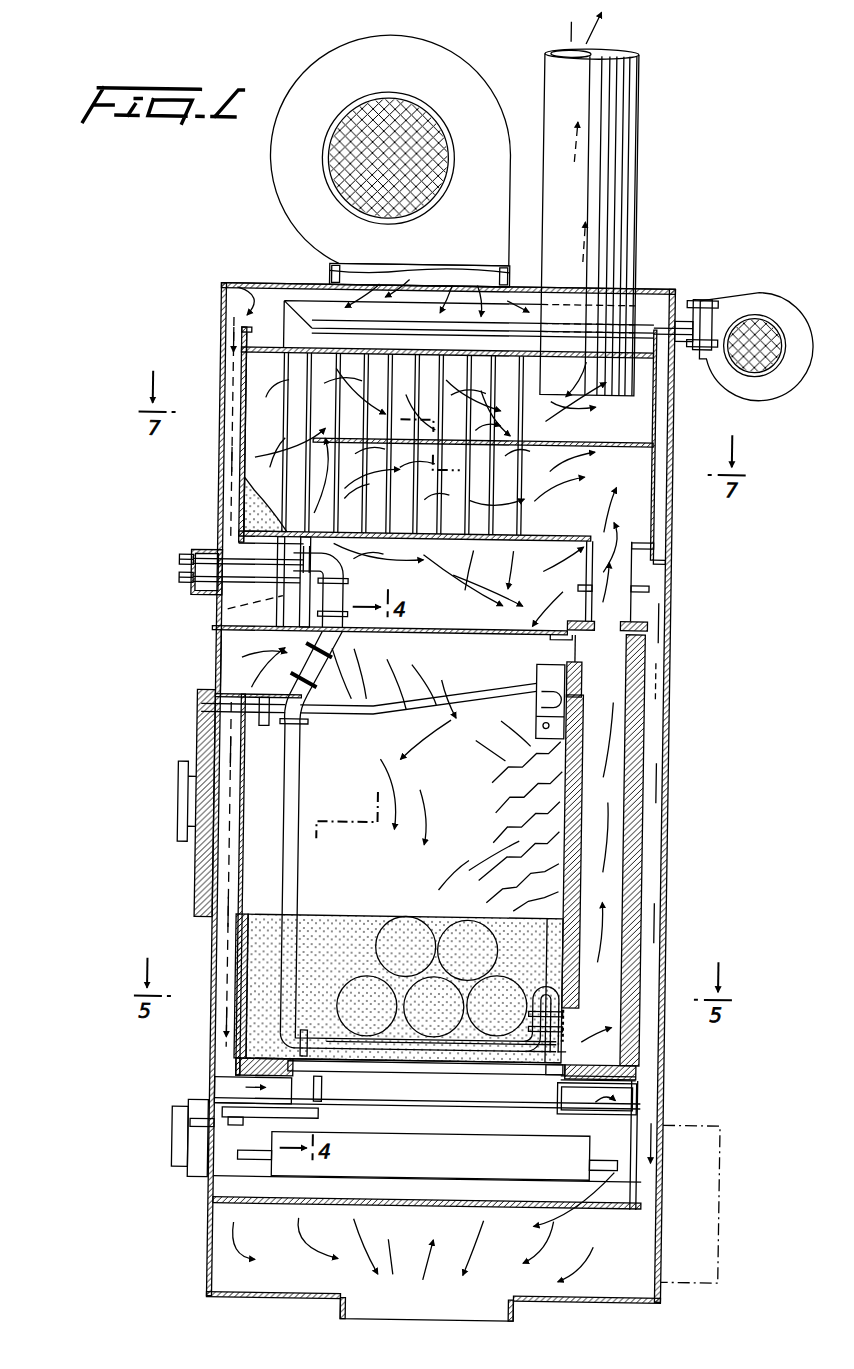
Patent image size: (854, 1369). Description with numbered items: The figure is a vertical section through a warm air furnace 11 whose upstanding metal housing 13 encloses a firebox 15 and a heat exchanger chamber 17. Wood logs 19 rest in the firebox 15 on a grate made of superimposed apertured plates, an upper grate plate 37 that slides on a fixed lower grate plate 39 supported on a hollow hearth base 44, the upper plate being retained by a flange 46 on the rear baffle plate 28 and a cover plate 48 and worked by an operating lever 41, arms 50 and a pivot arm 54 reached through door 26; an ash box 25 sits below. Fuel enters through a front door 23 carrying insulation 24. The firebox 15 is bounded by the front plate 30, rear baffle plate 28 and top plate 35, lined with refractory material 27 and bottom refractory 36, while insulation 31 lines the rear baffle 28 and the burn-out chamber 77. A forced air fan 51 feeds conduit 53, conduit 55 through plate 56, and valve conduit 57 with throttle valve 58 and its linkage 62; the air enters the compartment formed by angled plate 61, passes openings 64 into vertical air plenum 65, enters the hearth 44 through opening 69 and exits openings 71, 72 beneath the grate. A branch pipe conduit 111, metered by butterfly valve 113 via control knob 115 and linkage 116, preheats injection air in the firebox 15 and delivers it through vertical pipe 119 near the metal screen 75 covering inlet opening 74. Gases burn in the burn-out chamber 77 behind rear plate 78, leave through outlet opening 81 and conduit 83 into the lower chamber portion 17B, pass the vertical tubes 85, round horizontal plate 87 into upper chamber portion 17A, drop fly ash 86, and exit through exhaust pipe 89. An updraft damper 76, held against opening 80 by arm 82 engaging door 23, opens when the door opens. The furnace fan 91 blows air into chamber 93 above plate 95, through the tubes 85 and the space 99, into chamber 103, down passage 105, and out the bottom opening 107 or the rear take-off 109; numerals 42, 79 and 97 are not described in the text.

The warm air furnace 11 is at (113, 473).
The metal housing 13 is at (214, 320).
The firebox 15 is at (422, 792).
The heat exchanger chamber 17 is at (262, 372).
The upper chamber portion 17A is at (640, 411).
The lower chamber portion 17B is at (638, 500).
The wood logs 19 is at (458, 930).
The door 23 is at (242, 716).
The side panel 24 is at (198, 822).
The ash box 25 is at (300, 1160).
The door 26 is at (228, 1122).
The refractory material 27 is at (348, 920).
The rear baffle plate 28 is at (584, 870).
The front plate 30 is at (240, 930).
The high temperature insulation 31 is at (612, 735).
The top plate 35 is at (497, 630).
The refractory material 36 is at (238, 1005).
The upper grate plate 37 is at (548, 1068).
The lower grate plate 39 is at (437, 1074).
The operating lever 41 is at (272, 1132).
The bottom plate 42 is at (620, 1075).
The hearth base 44 is at (219, 1100).
The flange 46 is at (560, 1096).
The cover plate 48 is at (312, 1050).
The arms 50 is at (326, 1100).
The forced air fan 51 is at (757, 290).
The conduit 53 is at (668, 296).
The pivot arm 54 is at (195, 1145).
The conduit 55 is at (290, 440).
The plate 56 is at (290, 530).
The valve conduit 57 is at (288, 605).
The throttle valve 58 is at (230, 615).
The angled plate 61 is at (262, 668).
The linkage 62 is at (214, 597).
The openings 64 is at (262, 668).
The vertical air plenum 65 is at (188, 588).
The opening 69 is at (222, 1065).
The openings 71 is at (183, 1128).
The openings 72 is at (556, 1107).
The inlet opening 74 is at (612, 1062).
The metal screen 75 is at (566, 1020).
The updraft damper 76 is at (582, 678).
The burn-out chamber 77 is at (645, 760).
The rear plate 78 is at (648, 790).
The burner 79 is at (592, 728).
The opening 80 is at (592, 658).
The outlet opening 81 is at (625, 618).
The arm 82 is at (440, 706).
The conduit 83 is at (642, 568).
The vertical tubes 85 is at (466, 290).
The fly ash 86 is at (300, 515).
The horizontal plate 87 is at (632, 443).
The exhaust pipe 89 is at (628, 135).
The furnace fan 91 is at (446, 71).
The chamber 93 is at (228, 295).
The plate 95 is at (252, 348).
The stack connection 97 is at (525, 355).
The space 99 is at (224, 415).
The chamber 103 is at (505, 604).
The passage 105 is at (653, 822).
The bottom opening 107 is at (522, 1312).
The rear take-off 109 is at (718, 1228).
The pipe conduit 111 is at (348, 600).
The butterfly valve 113 is at (328, 468).
The control knob 115 is at (182, 565).
The linkage 116 is at (190, 553).
The vertical pipe 119 is at (555, 1002).